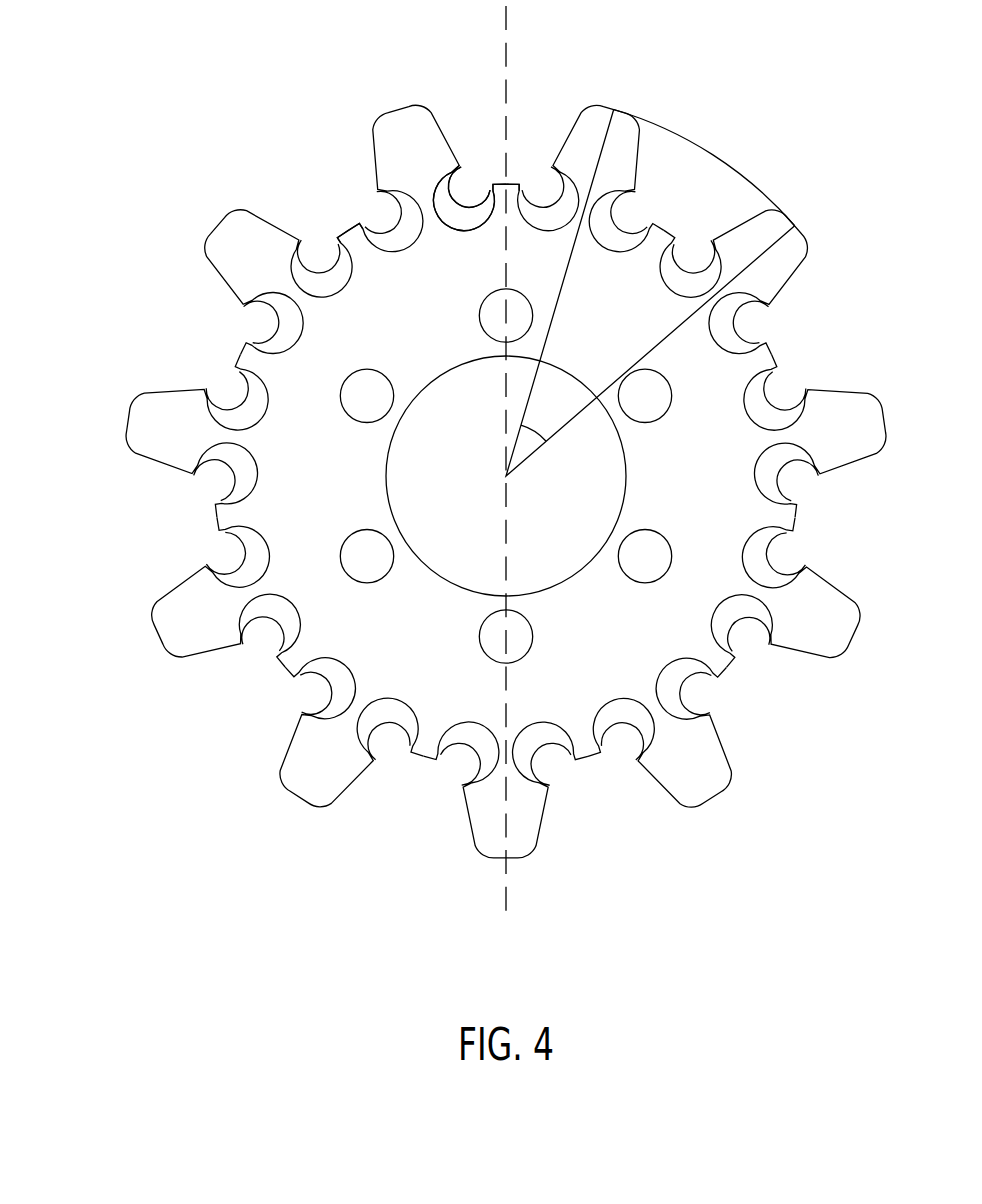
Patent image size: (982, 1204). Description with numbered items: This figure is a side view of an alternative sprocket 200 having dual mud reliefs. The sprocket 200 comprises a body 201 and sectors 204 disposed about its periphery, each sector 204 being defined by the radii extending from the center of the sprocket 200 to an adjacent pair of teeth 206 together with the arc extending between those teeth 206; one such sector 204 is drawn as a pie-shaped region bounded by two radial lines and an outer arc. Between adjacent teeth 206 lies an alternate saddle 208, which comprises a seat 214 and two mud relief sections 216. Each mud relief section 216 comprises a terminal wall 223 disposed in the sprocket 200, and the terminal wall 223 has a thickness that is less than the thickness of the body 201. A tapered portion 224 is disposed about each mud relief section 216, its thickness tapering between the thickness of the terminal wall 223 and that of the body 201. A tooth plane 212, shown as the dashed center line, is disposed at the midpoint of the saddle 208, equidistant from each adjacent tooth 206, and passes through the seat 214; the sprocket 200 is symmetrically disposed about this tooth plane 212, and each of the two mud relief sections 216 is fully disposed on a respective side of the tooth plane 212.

The alternative sprocket 200 is at (460, 453).
The body 201 is at (372, 476).
The sector 204 is at (682, 287).
The tooth 206 is at (332, 747).
The alternate saddle 208 is at (460, 797).
The tooth plane 212 is at (555, 457).
The seat 214 is at (298, 199).
The mud relief section 216 is at (549, 112).
The terminal wall 223 is at (442, 136).
The tapered portion 224 is at (389, 169).